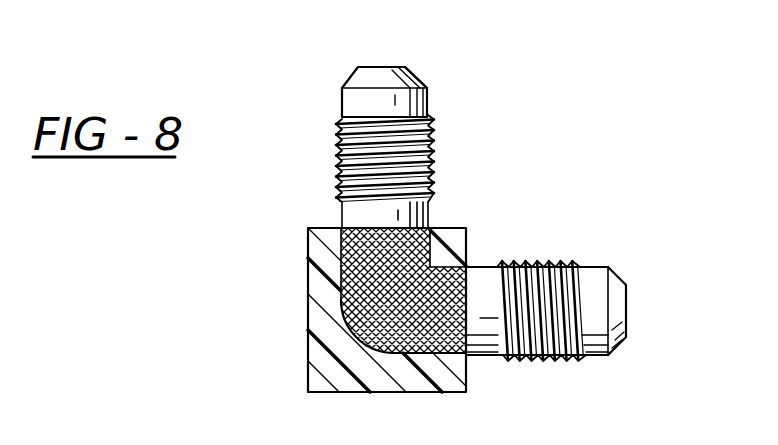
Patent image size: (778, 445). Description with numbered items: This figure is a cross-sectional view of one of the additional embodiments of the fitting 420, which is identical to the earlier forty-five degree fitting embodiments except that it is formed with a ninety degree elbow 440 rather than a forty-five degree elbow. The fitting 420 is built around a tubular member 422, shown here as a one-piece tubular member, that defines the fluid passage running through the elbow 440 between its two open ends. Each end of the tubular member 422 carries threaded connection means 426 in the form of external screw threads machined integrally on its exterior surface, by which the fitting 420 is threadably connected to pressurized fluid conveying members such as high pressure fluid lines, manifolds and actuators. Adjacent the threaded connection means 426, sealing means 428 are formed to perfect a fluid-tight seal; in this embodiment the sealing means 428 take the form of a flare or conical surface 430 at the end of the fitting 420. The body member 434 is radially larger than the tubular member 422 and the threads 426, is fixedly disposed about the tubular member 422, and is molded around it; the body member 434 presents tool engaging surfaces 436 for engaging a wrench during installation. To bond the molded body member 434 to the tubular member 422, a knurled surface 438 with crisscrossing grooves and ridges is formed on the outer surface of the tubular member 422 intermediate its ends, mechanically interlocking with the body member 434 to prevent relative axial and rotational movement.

The fitting 420 is at (575, 156).
The tubular member 422 is at (432, 102).
The threaded connection means 426 is at (432, 172).
The sealing means 428 is at (409, 60).
The conical surface 430 is at (418, 82).
The body member 434 is at (306, 274).
The tool engaging surfaces 436 is at (537, 311).
The knurled surface 438 is at (401, 378).
The ninety degree elbow 440 is at (352, 333).